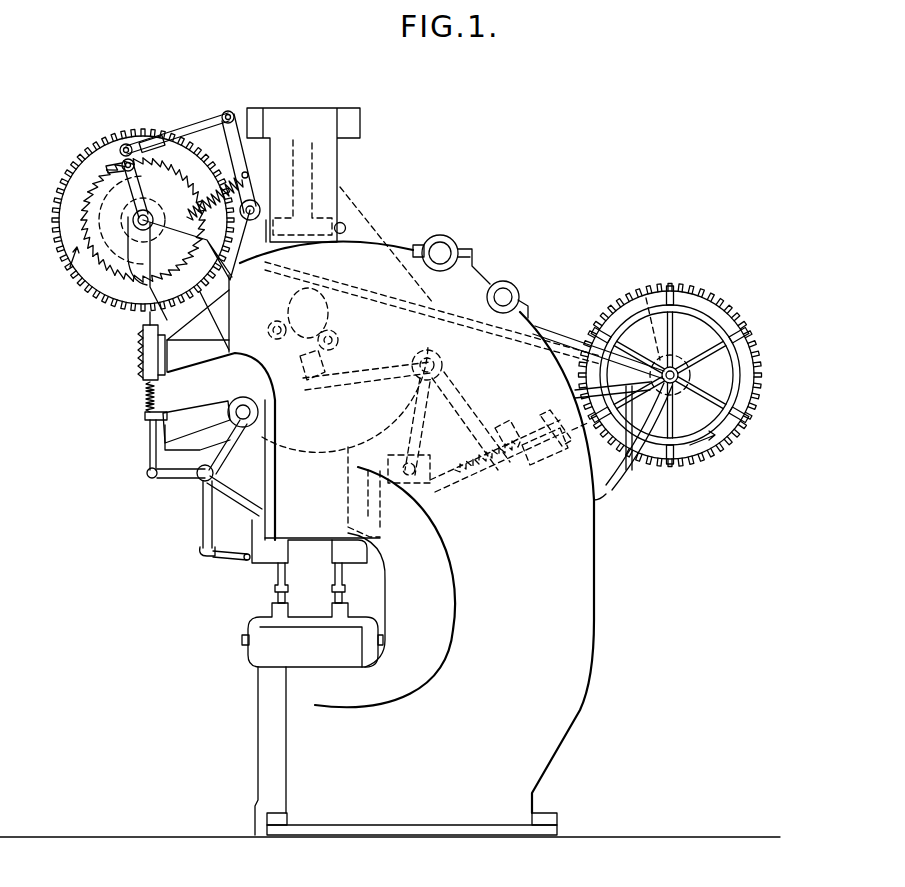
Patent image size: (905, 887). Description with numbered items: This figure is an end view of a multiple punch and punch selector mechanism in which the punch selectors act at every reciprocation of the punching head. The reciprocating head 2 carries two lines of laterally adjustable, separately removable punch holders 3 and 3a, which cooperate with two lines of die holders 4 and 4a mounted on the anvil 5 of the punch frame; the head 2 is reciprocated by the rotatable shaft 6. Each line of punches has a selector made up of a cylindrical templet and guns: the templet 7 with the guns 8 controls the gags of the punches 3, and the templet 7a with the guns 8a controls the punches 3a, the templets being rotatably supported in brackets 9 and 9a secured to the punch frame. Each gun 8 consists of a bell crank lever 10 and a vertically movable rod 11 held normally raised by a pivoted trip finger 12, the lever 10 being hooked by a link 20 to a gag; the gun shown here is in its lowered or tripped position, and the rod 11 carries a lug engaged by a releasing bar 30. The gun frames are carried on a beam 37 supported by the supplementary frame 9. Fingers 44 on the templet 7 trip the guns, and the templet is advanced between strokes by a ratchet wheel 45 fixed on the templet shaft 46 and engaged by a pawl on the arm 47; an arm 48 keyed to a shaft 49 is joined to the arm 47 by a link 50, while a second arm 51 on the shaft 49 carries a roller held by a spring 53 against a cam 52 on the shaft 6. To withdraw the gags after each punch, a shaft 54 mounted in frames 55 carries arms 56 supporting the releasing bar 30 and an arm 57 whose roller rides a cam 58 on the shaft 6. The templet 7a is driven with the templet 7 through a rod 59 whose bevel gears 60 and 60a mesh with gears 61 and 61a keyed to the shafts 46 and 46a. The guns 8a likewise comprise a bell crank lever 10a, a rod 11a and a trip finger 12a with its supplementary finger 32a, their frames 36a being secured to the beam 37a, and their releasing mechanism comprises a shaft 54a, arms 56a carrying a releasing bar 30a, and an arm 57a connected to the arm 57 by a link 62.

The reciprocating head 2 is at (370, 441).
The punch holders 3 is at (262, 565).
The punch holders 3a is at (355, 572).
The die holders 4 is at (248, 642).
The die holders 4a is at (372, 633).
The anvil 5 is at (262, 671).
The rotatable shaft 6 is at (463, 258).
The templet 7 is at (104, 150).
The templet 7a is at (700, 320).
The guns 8 is at (161, 469).
The guns 8a is at (528, 495).
The brackets 9 is at (261, 375).
The brackets 9a is at (612, 492).
The bell crank lever 10 is at (204, 515).
The bell crank lever 10a is at (380, 490).
The vertically movable rod 11 is at (150, 434).
The rod 11a is at (470, 500).
The trip finger 12 is at (142, 348).
The trip finger 12a is at (555, 450).
The link 20 is at (222, 556).
The releasing bar 30 is at (168, 450).
The releasing bar 30a is at (428, 469).
The supplementary finger 32a is at (636, 466).
The frames 36a is at (540, 470).
The beam 37 is at (168, 397).
The beam 37a is at (535, 440).
The fingers 44 is at (80, 275).
The ratchet wheel 45 is at (92, 192).
The shaft 46 is at (132, 223).
The shaft 46a is at (683, 385).
The pawl-provided arm 47 is at (143, 220).
The arm 48 is at (237, 153).
The shaft 49 is at (260, 206).
The link 50 is at (185, 132).
The second arm 51 is at (345, 226).
The cam 52 is at (268, 343).
The spring 53 is at (207, 190).
The shaft 54 is at (258, 413).
The shaft 54a is at (440, 360).
The frames 55 is at (232, 500).
The arms 56 is at (228, 447).
The arms 56a is at (457, 415).
The arm 57 is at (298, 384).
The arm 57a is at (400, 360).
The cam 58 is at (330, 320).
The rod 59 is at (553, 340).
The bevel gear 60 is at (140, 248).
The bevel gear 60a is at (640, 300).
The gear 61 is at (100, 175).
The gear 61a is at (742, 348).
The link 62 is at (338, 345).